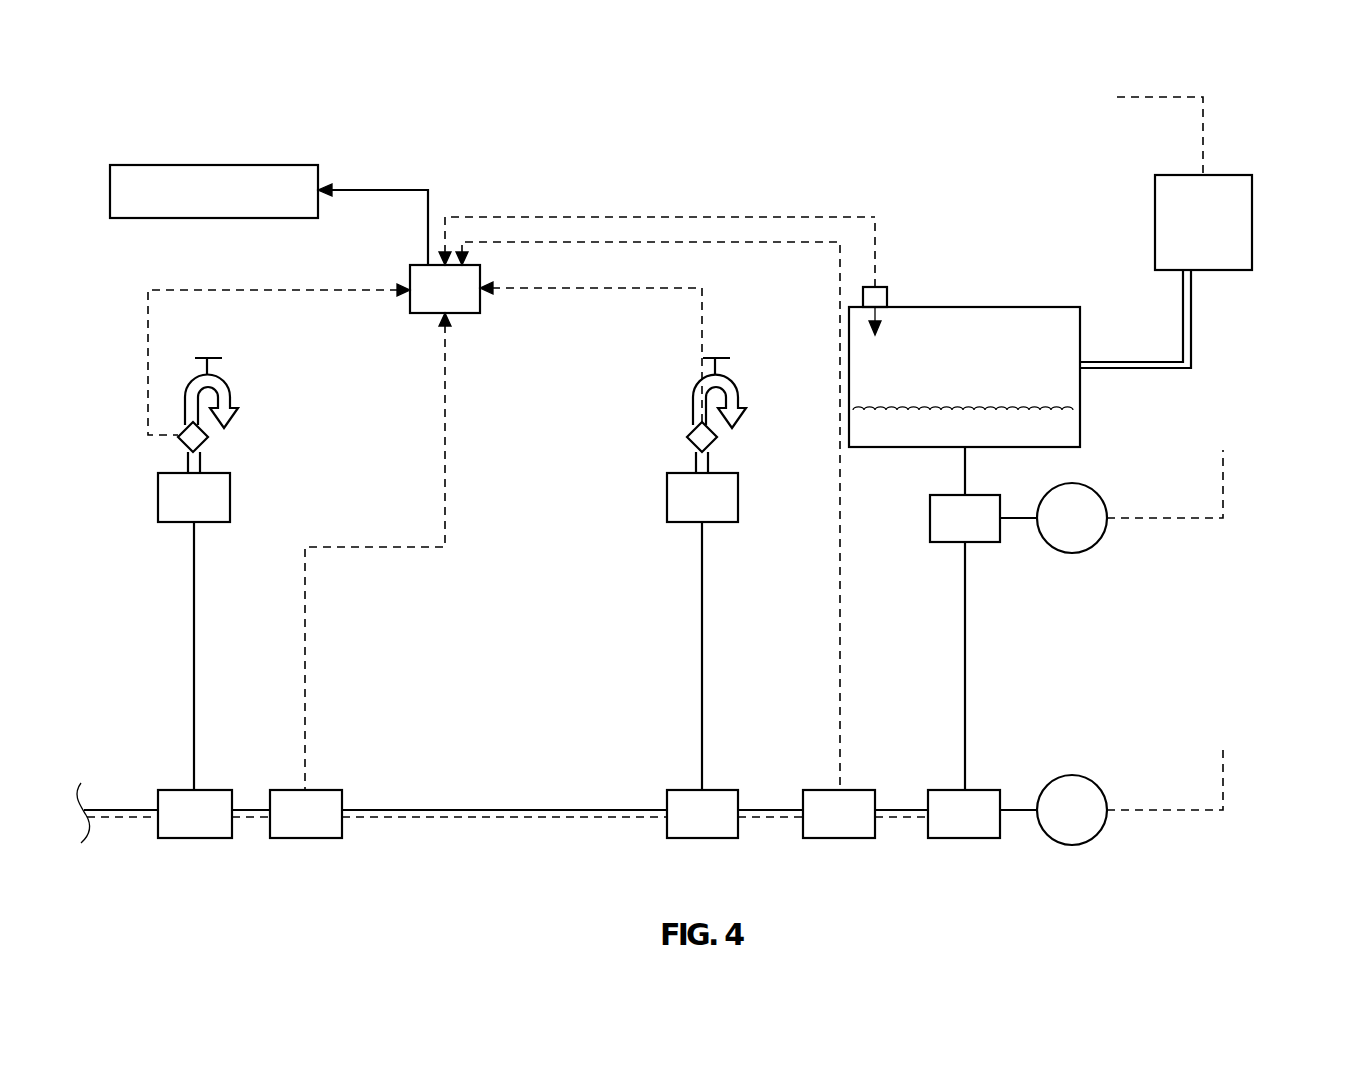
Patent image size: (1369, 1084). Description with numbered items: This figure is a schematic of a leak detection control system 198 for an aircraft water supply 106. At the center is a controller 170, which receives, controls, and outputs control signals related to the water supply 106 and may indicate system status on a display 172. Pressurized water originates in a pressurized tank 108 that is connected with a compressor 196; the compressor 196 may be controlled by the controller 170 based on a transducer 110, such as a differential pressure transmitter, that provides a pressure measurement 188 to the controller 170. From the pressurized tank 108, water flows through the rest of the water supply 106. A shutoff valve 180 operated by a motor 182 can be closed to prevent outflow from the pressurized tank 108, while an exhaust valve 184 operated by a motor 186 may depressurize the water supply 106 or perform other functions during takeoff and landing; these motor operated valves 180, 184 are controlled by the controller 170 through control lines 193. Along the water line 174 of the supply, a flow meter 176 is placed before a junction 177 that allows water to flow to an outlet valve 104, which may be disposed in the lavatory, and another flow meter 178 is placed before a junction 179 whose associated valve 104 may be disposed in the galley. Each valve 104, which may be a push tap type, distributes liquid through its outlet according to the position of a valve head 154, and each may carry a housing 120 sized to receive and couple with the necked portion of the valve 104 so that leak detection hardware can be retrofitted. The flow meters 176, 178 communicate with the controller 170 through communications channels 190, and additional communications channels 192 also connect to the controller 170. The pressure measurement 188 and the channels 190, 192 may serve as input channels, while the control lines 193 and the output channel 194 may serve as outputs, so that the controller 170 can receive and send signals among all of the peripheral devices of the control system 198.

The valve 104 is at (229, 389).
The water supply 106 is at (192, 655).
The pressurized tank 108 is at (1009, 306).
The transducer 110 is at (878, 287).
The housing 120 is at (717, 444).
The valve head 154 is at (213, 357).
The controller 170 is at (425, 263).
The display 172 is at (182, 164).
The main supply line 174 is at (548, 820).
The flow meter 176 is at (823, 789).
The junction 177 is at (686, 789).
The flow meter 178 is at (289, 789).
The junction 179 is at (177, 789).
The shutoff valve 180 is at (953, 494).
The motor 182 is at (1092, 490).
The exhaust valve 184 is at (949, 789).
The motor 186 is at (1094, 784).
The pressure measurement 188 is at (765, 215).
The communications channel 190 is at (307, 620).
The communications channel 192 is at (365, 292).
The control line 193 is at (1165, 818).
The output channel 194 is at (1161, 96).
The compressor 196 is at (1230, 174).
The control system 198 is at (877, 93).